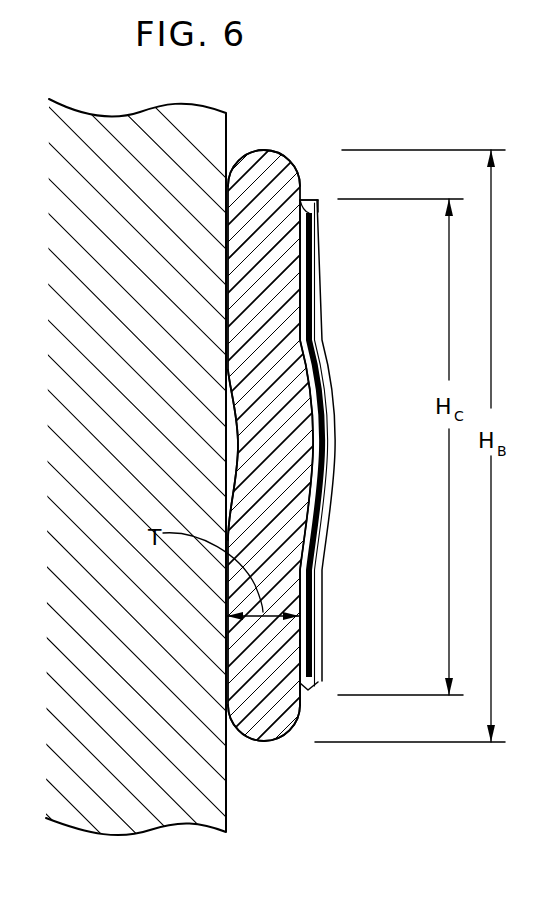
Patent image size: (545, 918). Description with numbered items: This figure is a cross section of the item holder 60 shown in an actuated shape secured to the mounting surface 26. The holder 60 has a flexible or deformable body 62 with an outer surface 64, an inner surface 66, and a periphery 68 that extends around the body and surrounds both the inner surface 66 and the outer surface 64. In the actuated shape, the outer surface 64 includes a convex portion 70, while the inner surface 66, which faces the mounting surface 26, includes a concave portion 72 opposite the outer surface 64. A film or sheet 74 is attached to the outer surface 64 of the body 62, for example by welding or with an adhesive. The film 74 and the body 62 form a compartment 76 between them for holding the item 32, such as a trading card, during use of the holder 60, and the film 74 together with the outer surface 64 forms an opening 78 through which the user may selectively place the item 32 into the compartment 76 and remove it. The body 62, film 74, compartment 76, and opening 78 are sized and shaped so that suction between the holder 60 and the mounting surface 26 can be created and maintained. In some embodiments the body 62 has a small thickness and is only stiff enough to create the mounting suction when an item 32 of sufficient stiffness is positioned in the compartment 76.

The mounting surface 26 is at (245, 815).
The item 32 is at (320, 585).
The item holder 60 is at (300, 96).
The flexible or deformable body 62 is at (280, 738).
The outer surface 64 is at (318, 715).
The inner surface 66 is at (210, 656).
The periphery 68 is at (267, 148).
The convex portion 70 is at (311, 355).
The concave portion 72 is at (233, 433).
The film or sheet 74 is at (322, 291).
The compartment 76 is at (305, 200).
The opening 78 is at (311, 203).